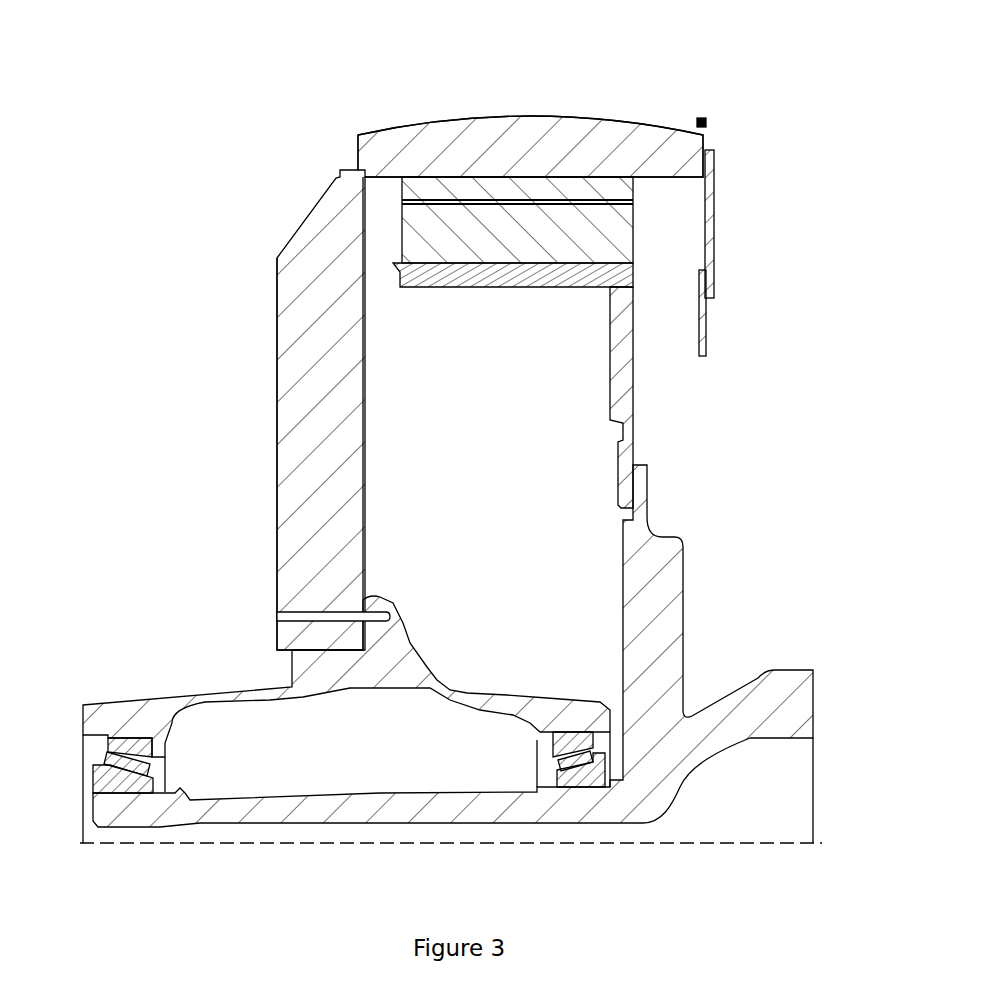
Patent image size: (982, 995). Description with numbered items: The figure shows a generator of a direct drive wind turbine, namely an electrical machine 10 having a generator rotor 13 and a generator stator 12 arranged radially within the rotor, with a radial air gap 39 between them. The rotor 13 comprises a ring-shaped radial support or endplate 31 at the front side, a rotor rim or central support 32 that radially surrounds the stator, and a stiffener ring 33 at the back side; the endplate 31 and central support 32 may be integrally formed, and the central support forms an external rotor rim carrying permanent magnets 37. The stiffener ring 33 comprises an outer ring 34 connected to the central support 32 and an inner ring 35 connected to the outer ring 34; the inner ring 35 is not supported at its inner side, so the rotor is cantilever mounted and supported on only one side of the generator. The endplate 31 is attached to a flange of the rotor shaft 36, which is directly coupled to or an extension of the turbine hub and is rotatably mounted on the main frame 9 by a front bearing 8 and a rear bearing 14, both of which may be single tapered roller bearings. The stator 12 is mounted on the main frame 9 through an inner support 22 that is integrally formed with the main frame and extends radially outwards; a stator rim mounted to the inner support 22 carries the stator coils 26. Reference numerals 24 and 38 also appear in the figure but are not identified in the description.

The front bearing 8 is at (137, 748).
The main frame 9 is at (400, 815).
The electrical machine 10 is at (443, 348).
The generator stator 12 is at (453, 594).
The generator rotor 13 is at (462, 453).
The rear bearing 14 is at (575, 785).
The inner support 22 is at (453, 683).
The rotor carrier 24 is at (628, 372).
The stator coils 26 is at (617, 234).
The endplate 31 is at (290, 345).
The central support 32 is at (457, 120).
The stiffener ring 33 is at (776, 256).
The outer ring 34 is at (714, 233).
The inner ring 35 is at (708, 313).
The rotor shaft 36 is at (346, 676).
The permanent magnets 37 is at (642, 204).
The gap 38 is at (264, 614).
The radial air gap 39 is at (618, 183).